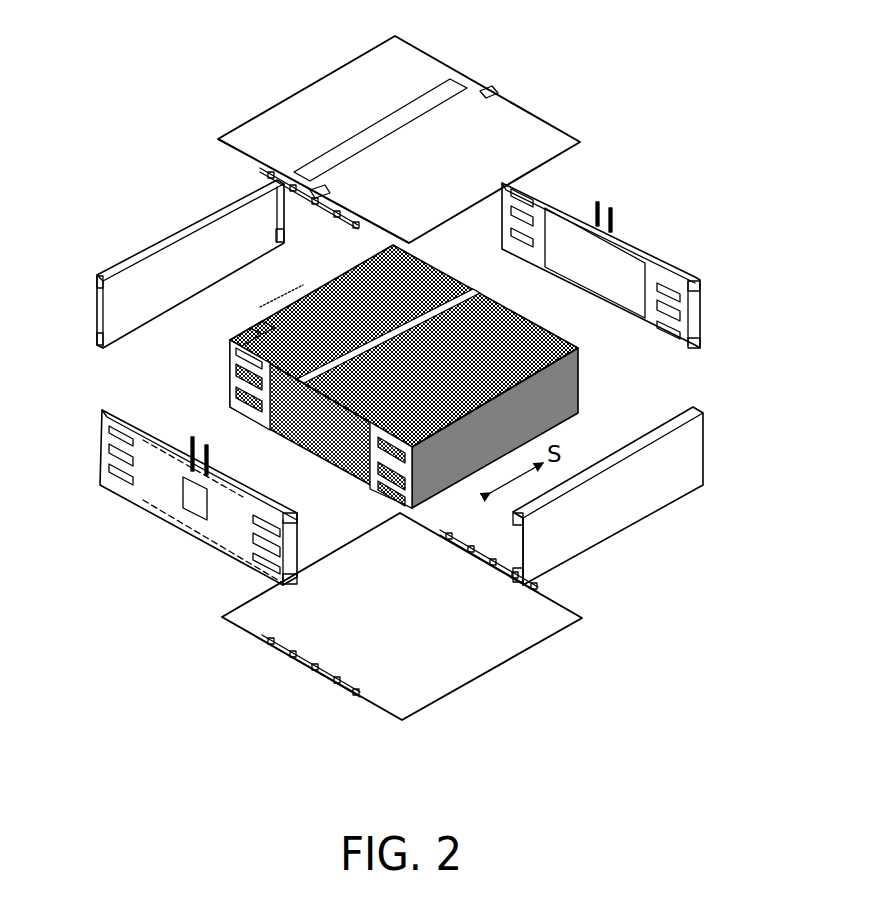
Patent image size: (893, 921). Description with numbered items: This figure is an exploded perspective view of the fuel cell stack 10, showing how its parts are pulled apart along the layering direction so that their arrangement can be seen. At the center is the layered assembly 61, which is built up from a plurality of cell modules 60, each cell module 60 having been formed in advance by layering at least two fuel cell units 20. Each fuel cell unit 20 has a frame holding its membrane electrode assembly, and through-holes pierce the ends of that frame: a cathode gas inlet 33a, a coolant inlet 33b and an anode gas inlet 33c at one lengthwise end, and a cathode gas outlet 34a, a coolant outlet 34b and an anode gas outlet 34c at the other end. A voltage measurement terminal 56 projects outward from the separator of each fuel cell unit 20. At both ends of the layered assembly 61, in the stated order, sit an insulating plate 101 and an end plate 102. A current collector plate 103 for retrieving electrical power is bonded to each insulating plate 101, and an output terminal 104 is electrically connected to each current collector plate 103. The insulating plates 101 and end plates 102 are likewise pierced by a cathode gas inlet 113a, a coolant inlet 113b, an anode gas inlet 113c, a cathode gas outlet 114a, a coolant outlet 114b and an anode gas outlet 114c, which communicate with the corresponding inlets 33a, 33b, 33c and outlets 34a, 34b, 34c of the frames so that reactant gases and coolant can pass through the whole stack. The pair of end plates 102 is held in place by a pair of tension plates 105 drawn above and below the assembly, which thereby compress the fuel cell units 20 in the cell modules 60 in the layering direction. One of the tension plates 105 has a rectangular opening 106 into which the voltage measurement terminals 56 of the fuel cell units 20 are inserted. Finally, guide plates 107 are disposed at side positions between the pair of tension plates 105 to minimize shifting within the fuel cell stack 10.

The fuel cell stack 10 is at (60, 38).
The fuel cell unit 20 is at (575, 350).
The cathode gas inlet 33a is at (235, 352).
The coolant inlet 33b is at (235, 377).
The anode gas inlet 33c is at (235, 400).
The cathode gas outlet 34a is at (382, 498).
The coolant outlet 34b is at (387, 471).
The anode gas outlet 34c is at (383, 457).
The voltage measurement terminal 56 is at (453, 282).
The cell module 60 is at (232, 338).
The layered assembly 61 is at (342, 266).
The insulating plate 101 is at (685, 343).
The end plate 102 is at (700, 297).
The current collector plate 103 is at (595, 275).
The output terminal 104 is at (612, 212).
The tension plate 105 is at (523, 118).
The rectangular opening 106 is at (337, 145).
The guide plate 107 is at (122, 258).
The cathode gas inlet 113a is at (520, 198).
The coolant inlet 113b is at (522, 215).
The anode gas inlet 113c is at (522, 236).
The cathode gas outlet 114a is at (686, 345).
The coolant outlet 114b is at (688, 343).
The anode gas outlet 114c is at (697, 313).